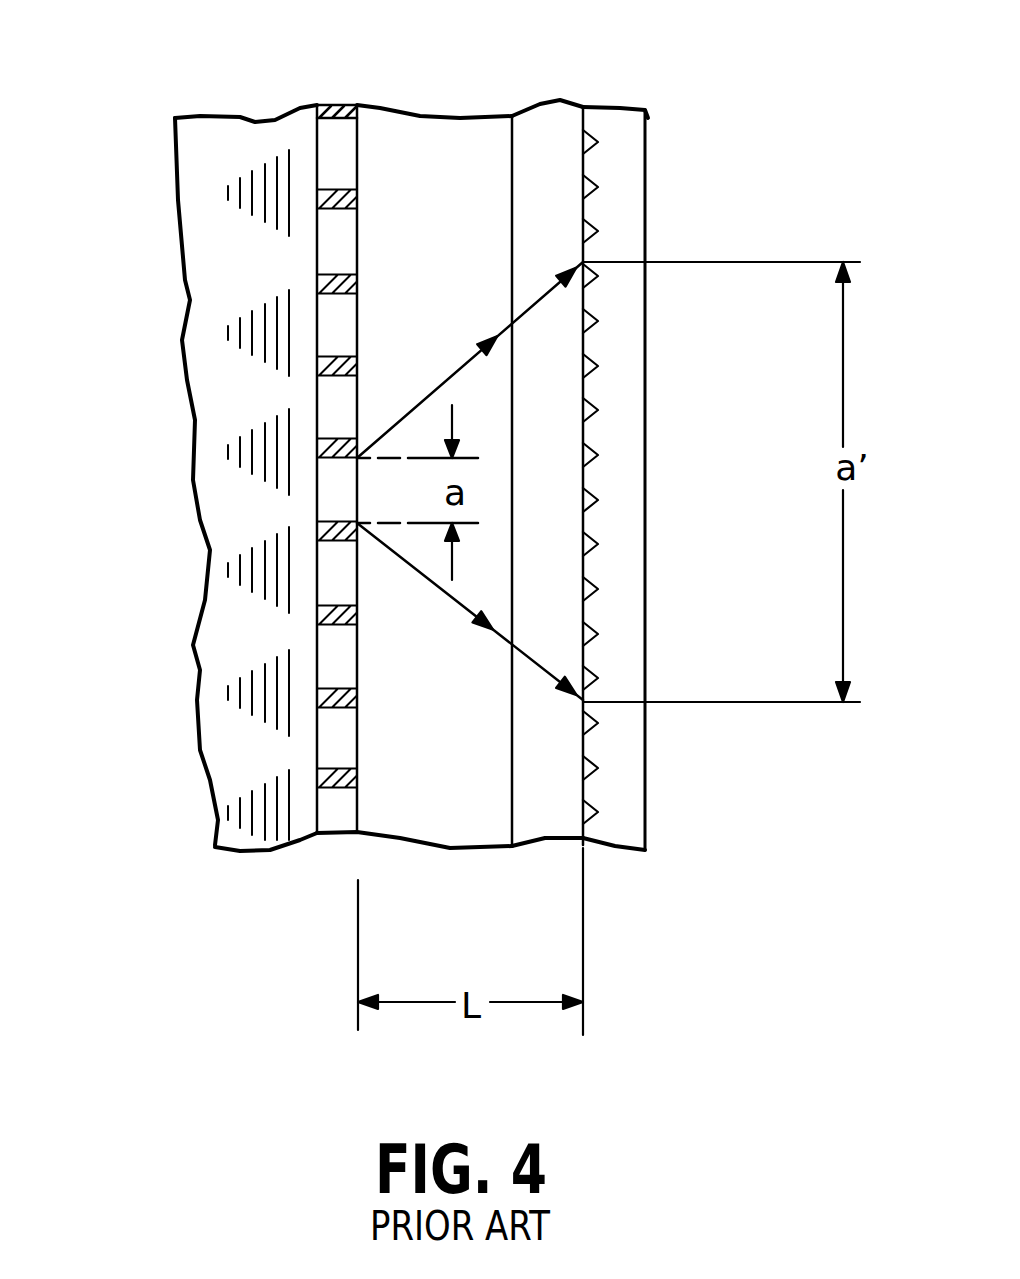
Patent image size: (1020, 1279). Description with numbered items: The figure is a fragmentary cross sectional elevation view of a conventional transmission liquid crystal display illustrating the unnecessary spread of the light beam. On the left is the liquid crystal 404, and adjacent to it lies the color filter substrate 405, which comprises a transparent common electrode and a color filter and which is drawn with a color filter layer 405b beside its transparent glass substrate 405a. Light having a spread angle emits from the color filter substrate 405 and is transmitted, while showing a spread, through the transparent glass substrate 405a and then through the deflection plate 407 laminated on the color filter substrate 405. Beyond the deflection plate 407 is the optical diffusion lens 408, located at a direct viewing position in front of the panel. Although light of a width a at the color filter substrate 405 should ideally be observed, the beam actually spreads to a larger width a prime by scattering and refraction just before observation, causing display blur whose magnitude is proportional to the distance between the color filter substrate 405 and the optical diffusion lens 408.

The liquid crystal 404 is at (220, 237).
The color filter substrate 405 is at (360, 469).
The transparent glass substrate 405a is at (442, 190).
The slit array / grating layer 405b is at (342, 153).
The deflection plate 407 is at (557, 152).
The optical diffusion lens 408 is at (618, 798).